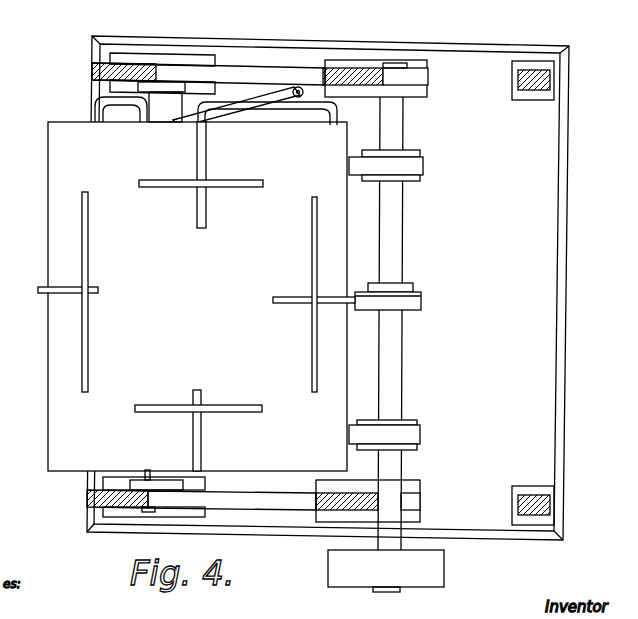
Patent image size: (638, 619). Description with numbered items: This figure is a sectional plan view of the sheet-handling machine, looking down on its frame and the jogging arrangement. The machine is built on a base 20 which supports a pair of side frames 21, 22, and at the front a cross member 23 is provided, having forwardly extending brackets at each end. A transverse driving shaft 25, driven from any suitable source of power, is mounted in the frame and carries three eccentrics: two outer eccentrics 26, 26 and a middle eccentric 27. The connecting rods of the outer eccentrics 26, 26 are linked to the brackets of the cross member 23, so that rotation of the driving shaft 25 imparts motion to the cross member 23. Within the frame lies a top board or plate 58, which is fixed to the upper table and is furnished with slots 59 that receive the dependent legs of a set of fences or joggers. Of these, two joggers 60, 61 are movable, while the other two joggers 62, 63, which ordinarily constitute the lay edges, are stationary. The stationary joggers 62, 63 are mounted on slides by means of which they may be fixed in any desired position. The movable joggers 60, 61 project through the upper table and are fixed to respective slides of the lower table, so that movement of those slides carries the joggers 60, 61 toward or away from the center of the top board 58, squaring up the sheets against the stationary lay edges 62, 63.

The base 20 is at (207, 43).
The side frame 21 is at (87, 498).
The side frame 22 is at (105, 62).
The cross member 23 is at (156, 479).
The transverse driving shaft 25 is at (403, 126).
The eccentric 26 is at (423, 165).
The eccentric 27 is at (422, 298).
The top board 58 is at (30, 404).
The slot 59 is at (200, 152).
The movable jogger 60 is at (310, 262).
The movable jogger 61 is at (250, 190).
The stationary jogger 62 is at (90, 230).
The stationary jogger 63 is at (192, 394).